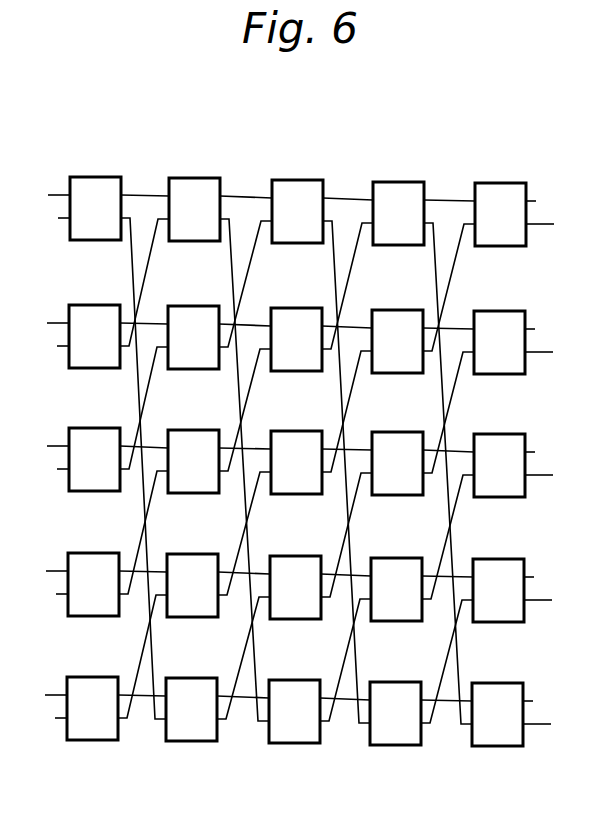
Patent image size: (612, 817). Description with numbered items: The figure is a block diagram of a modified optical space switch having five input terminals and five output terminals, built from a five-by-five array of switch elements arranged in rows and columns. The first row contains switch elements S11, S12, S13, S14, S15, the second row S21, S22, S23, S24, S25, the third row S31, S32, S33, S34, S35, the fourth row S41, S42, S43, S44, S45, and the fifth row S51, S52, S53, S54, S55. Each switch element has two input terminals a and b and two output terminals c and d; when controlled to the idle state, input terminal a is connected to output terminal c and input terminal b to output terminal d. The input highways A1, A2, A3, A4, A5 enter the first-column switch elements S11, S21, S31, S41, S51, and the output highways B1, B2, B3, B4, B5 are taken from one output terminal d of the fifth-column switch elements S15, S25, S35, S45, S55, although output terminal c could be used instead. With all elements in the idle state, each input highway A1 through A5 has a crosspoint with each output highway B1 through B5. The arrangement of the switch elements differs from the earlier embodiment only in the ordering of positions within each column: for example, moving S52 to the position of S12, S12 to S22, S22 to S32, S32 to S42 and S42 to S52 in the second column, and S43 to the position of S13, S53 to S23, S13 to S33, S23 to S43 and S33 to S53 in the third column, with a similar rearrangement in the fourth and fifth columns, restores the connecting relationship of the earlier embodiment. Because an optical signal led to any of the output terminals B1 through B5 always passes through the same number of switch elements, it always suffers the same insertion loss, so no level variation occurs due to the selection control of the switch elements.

The switch element S11 is at (119, 436).
The switch element S12 is at (220, 438).
The switch element S13 is at (322, 440).
The switch element S14 is at (424, 441).
The switch element S15 is at (500, 203).
The switch element S21 is at (119, 293).
The switch element S22 is at (220, 295).
The switch element S23 is at (322, 297).
The switch element S24 is at (423, 298).
The switch element S25 is at (499, 331).
The switch element S31 is at (118, 419).
The switch element S32 is at (219, 421).
The switch element S33 is at (321, 422).
The switch element S34 is at (423, 423).
The switch element S35 is at (499, 454).
The switch element S41 is at (118, 543).
The switch element S42 is at (219, 544).
The switch element S43 is at (321, 546).
The switch element S44 is at (422, 548).
The switch element S45 is at (498, 579).
The switch element S51 is at (117, 667).
The switch element S52 is at (218, 669).
The switch element S53 is at (320, 671).
The switch element S54 is at (421, 672).
The switch element S55 is at (497, 703).
The input highway A1 is at (43, 202).
The input highway A2 is at (42, 330).
The input highway A3 is at (42, 453).
The input highway A4 is at (41, 578).
The input highway A5 is at (40, 702).
The output highway B1 is at (553, 217).
The output highway B2 is at (552, 345).
The output highway B3 is at (552, 468).
The output highway B4 is at (551, 593).
The output highway B5 is at (550, 717).